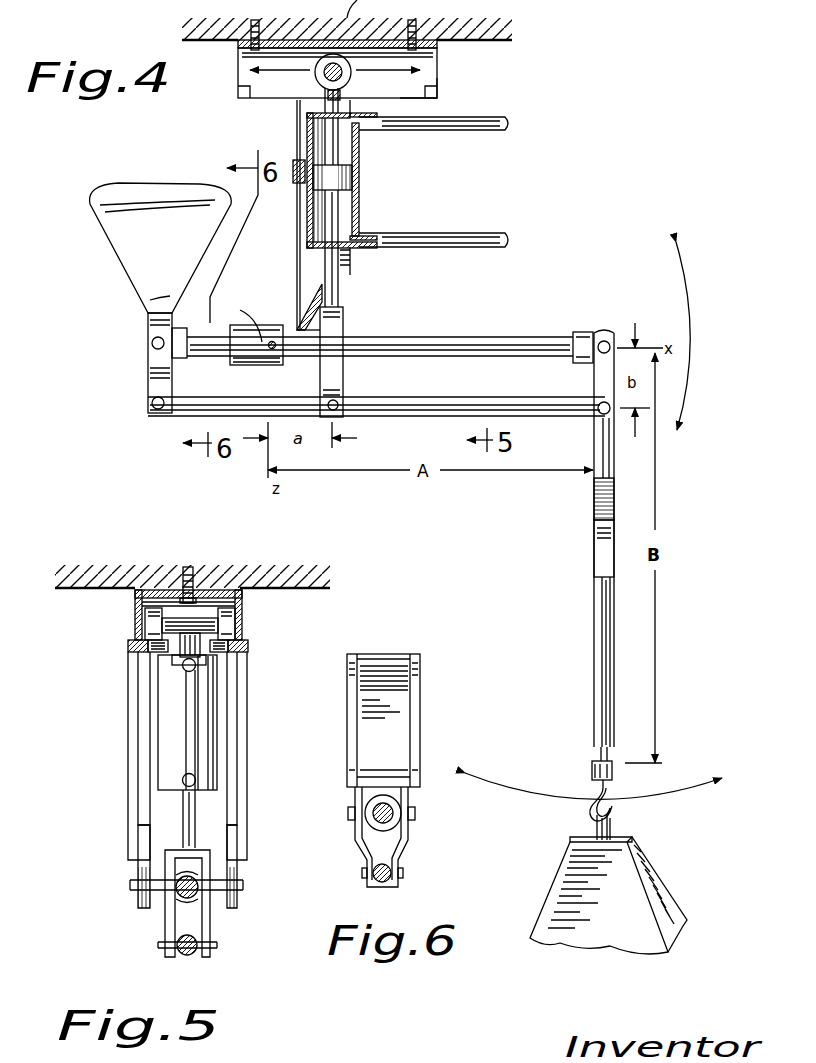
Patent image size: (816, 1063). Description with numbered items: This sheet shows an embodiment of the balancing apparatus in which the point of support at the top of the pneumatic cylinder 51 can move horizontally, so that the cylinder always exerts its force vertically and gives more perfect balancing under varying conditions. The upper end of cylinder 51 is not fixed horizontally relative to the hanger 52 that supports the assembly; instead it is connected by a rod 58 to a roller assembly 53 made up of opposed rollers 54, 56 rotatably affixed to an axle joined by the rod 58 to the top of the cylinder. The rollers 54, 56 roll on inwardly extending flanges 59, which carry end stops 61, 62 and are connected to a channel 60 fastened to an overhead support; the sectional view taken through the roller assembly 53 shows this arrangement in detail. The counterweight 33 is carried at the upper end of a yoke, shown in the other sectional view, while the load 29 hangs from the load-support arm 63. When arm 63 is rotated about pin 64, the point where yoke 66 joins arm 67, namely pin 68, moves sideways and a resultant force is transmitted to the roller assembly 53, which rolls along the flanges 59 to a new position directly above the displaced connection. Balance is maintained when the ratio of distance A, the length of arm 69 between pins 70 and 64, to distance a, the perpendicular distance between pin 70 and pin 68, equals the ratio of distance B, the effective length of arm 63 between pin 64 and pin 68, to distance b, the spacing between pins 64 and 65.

In FIG. 4, the load 29 is at (672, 913).
In FIG. 4, the counterweight 33 is at (126, 252).
In FIG. 6, the counterweight 33 is at (415, 727).
In FIG. 4, the cylinder 51 is at (362, 157).
In FIG. 5, the cylinder 51 is at (167, 745).
In FIG. 4, the hanger 52 is at (325, 316).
In FIG. 5, the hanger 52 is at (240, 762).
In FIG. 4, the roller assembly 53 is at (318, 80).
In FIG. 5, the roller assembly 53 is at (228, 617).
In FIG. 5, the roller 54 is at (150, 622).
In FIG. 5, the roller 56 is at (234, 628).
In FIG. 5, the rod 58 is at (178, 651).
In FIG. 5, the flanges 59 is at (150, 648).
In FIG. 5, the channel 60 is at (133, 597).
In FIG. 4, the end stop 61 is at (238, 91).
In FIG. 4, the end stop 62 is at (437, 89).
In FIG. 4, the load-support arm 63 is at (595, 650).
In FIG. 4, the pin 64 is at (606, 342).
In FIG. 4, the pin 65 is at (599, 405).
In FIG. 4, the yoke 66 is at (346, 362).
In FIG. 4, the arm 67 is at (437, 407).
In FIG. 5, the arm 67 is at (186, 953).
In FIG. 6, the arm 67 is at (386, 881).
In FIG. 4, the pin 68 is at (340, 413).
In FIG. 4, the arm 69 is at (435, 337).
In FIG. 5, the arm 69 is at (196, 900).
In FIG. 6, the arm 69 is at (386, 821).
In FIG. 4, the pin 70 is at (271, 342).